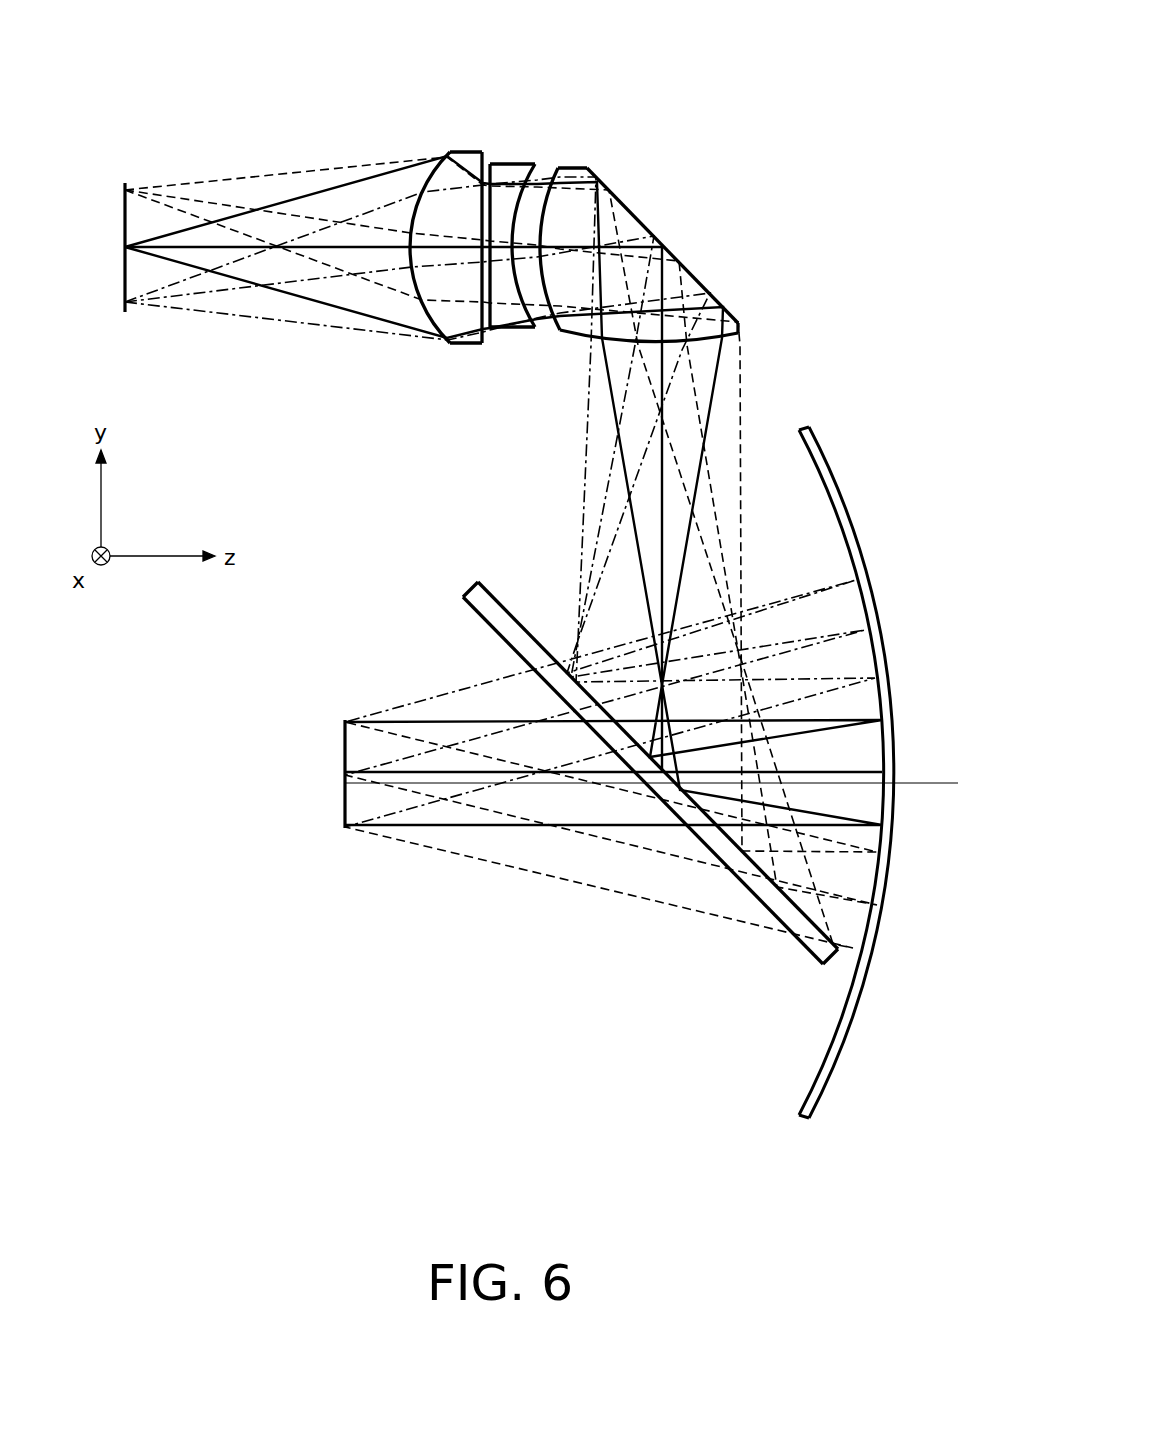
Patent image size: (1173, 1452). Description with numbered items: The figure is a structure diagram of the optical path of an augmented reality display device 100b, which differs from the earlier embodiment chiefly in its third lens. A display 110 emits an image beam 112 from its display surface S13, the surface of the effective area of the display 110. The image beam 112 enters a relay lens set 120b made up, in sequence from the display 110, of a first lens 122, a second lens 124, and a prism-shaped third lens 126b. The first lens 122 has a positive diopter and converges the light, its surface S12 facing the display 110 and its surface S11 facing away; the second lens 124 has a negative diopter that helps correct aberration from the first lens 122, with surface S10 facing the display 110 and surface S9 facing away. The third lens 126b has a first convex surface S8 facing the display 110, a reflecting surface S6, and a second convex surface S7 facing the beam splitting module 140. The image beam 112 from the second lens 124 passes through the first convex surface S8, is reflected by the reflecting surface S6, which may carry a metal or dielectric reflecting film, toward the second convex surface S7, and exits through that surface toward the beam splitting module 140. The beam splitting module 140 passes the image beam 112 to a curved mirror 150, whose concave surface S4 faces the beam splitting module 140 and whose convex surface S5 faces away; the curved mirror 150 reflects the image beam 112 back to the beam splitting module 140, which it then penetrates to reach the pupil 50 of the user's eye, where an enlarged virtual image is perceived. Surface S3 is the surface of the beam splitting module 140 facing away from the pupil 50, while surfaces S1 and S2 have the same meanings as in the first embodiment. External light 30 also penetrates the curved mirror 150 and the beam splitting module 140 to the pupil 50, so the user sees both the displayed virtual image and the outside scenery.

The augmented reality display device 100b is at (940, 1172).
The display 110 is at (122, 213).
The image beam 112 is at (298, 198).
The relay lens set 120b is at (618, 73).
The first lens 122 is at (465, 150).
The second lens 124 is at (513, 163).
The third lens 126b is at (575, 166).
The beam splitting module 140 is at (476, 586).
The curved mirror 150 is at (847, 510).
The pupil 50 is at (344, 718).
The external light 30 is at (920, 783).
The surface S1 is at (344, 787).
The surface S2 is at (766, 910).
The surface S3 is at (508, 606).
The surface S4 is at (814, 1069).
The surface S5 is at (890, 883).
The reflecting surface S6 is at (708, 300).
The second convex surface S7 is at (626, 342).
The first convex surface S8 is at (548, 326).
The surface S9 is at (524, 211).
The surface S10 is at (487, 180).
The surface S11 is at (485, 336).
The surface S12 is at (418, 318).
The display surface S13 is at (131, 274).